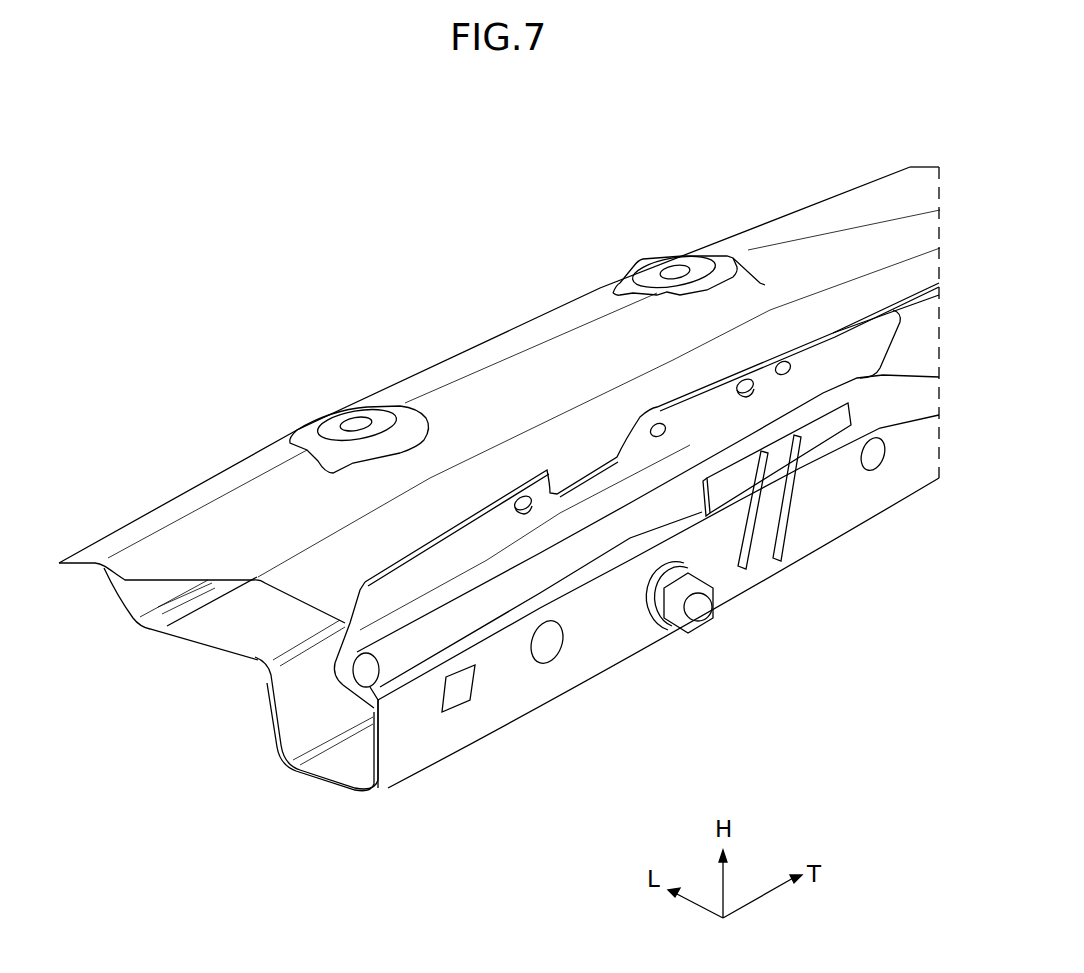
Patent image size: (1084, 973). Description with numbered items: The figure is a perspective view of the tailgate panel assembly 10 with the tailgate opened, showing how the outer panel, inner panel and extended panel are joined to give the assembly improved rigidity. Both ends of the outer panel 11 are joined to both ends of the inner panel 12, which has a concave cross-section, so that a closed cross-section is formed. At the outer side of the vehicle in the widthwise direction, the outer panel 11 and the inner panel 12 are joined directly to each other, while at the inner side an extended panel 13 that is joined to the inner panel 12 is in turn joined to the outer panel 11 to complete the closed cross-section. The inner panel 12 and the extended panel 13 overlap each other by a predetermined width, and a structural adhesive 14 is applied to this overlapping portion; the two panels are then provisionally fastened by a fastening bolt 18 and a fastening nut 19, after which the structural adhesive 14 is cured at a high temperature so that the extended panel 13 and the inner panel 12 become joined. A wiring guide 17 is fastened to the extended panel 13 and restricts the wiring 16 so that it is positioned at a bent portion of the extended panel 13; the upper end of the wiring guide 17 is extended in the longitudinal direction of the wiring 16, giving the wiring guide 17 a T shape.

The tailgate panel assembly 10 is at (710, 118).
The outer panel 11 is at (507, 397).
The inner panel 12 is at (130, 597).
The extended panel 13 is at (232, 637).
The structural adhesive 14 is at (283, 752).
The wiring 16 is at (490, 603).
The wiring guide 17 is at (775, 498).
The fastening bolt 18 is at (697, 612).
The fastening nut 19 is at (688, 603).